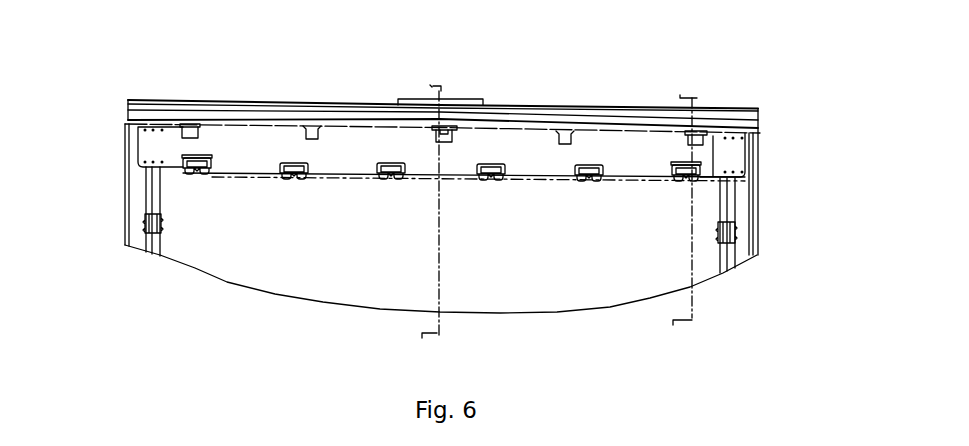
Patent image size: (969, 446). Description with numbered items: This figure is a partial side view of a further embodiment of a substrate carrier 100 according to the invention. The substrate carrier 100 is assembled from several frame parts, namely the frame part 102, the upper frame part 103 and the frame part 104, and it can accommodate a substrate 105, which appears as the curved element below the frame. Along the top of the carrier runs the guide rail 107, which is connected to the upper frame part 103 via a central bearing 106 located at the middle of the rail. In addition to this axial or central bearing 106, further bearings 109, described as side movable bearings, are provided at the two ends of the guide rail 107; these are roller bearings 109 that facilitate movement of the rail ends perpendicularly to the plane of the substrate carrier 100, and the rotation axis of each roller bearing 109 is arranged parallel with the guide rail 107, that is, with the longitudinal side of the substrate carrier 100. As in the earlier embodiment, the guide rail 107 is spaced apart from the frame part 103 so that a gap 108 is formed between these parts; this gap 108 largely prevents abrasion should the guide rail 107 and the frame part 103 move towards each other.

The substrate carrier 100 is at (762, 197).
The frame part 102 is at (750, 187).
The upper frame part 103 is at (715, 157).
The frame part 104 is at (138, 215).
The substrate 105 is at (332, 275).
The central bearing 106 is at (455, 129).
The guide rail 107 is at (608, 118).
The gap 108 is at (223, 125).
The roller bearing 109 is at (190, 123).